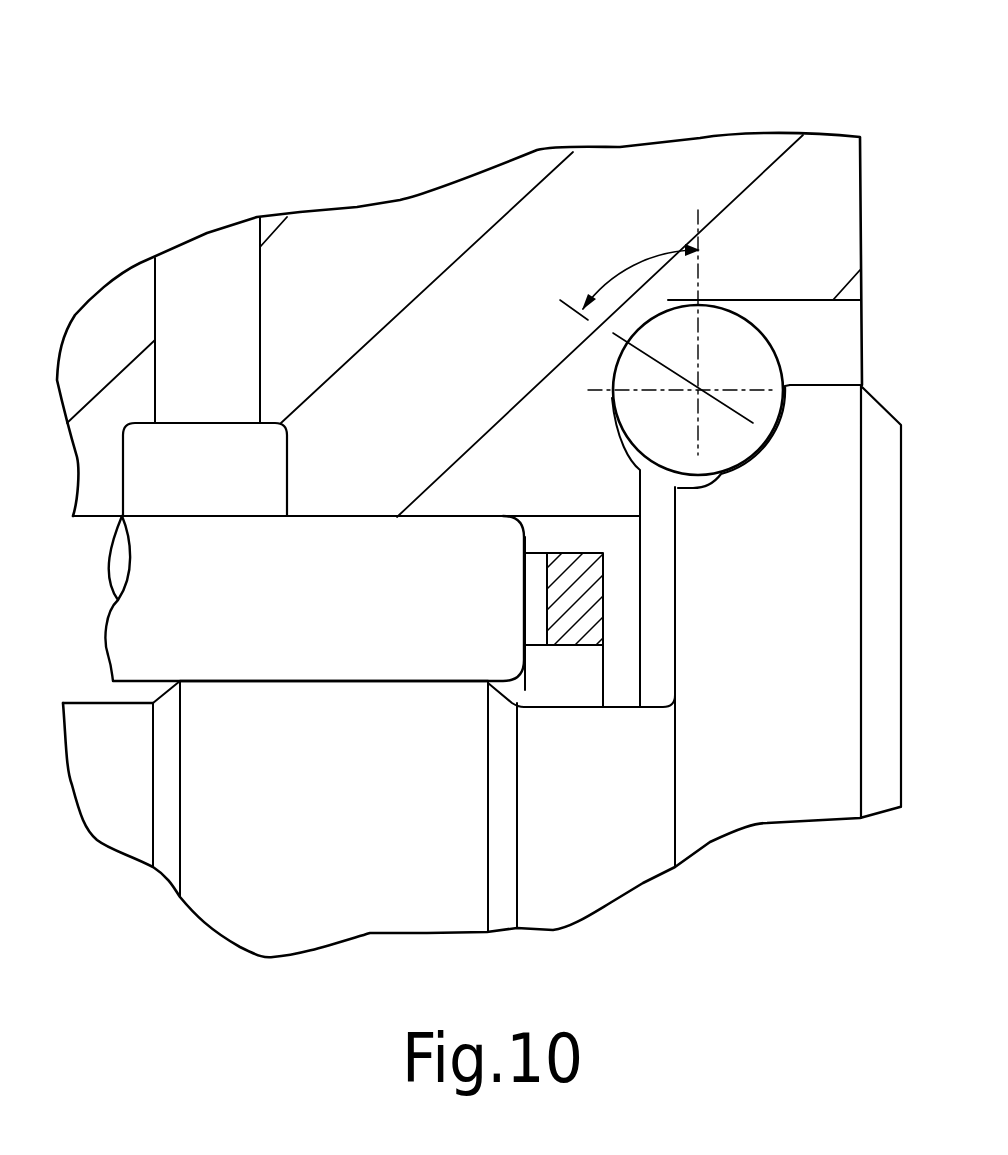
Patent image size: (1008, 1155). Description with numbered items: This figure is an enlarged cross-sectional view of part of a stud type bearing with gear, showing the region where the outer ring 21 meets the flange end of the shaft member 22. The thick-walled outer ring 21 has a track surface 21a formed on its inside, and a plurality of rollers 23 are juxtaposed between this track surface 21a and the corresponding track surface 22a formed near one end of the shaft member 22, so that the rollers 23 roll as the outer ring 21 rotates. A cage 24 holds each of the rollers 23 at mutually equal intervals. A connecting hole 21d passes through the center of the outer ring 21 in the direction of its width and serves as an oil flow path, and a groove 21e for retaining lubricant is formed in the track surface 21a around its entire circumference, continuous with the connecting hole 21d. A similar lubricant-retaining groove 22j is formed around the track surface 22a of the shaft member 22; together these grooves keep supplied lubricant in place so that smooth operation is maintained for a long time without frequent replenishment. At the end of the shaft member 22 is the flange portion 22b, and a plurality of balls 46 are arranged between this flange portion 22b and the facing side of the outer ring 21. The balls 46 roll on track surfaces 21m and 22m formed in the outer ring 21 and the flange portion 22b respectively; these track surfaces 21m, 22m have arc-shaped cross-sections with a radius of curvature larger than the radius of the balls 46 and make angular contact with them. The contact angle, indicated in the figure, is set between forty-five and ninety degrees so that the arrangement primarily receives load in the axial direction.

The outer ring 21 is at (331, 328).
The track surface 21a is at (327, 517).
The connecting hole 21d is at (258, 286).
The groove 21e is at (173, 424).
The track surface 21m is at (683, 303).
The shaft member 22 is at (386, 840).
The track surface 22a is at (228, 680).
The flange portion 22b is at (800, 788).
The groove 22j is at (98, 703).
The track surface 22m is at (690, 500).
The rollers 23 is at (433, 535).
The cage 24 is at (567, 555).
The balls 46 is at (720, 340).